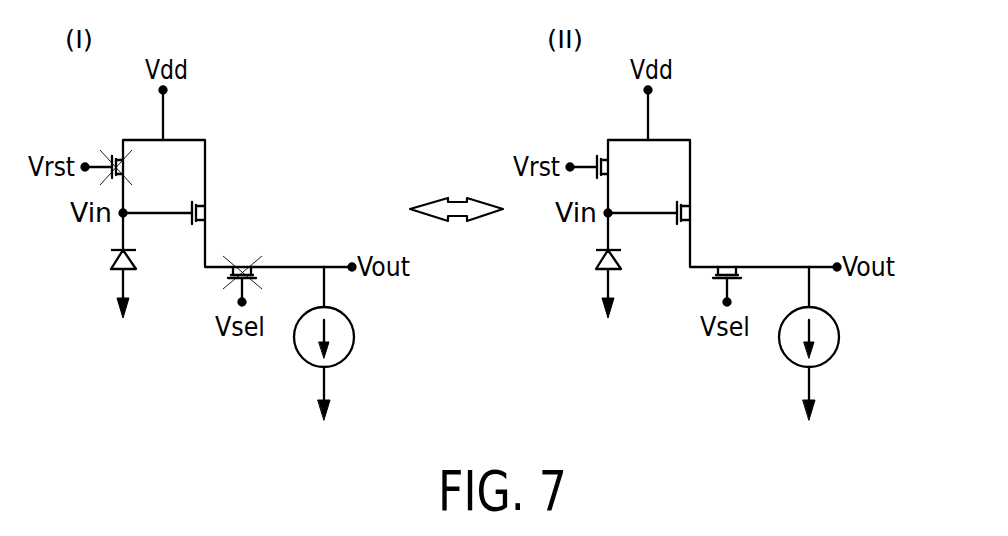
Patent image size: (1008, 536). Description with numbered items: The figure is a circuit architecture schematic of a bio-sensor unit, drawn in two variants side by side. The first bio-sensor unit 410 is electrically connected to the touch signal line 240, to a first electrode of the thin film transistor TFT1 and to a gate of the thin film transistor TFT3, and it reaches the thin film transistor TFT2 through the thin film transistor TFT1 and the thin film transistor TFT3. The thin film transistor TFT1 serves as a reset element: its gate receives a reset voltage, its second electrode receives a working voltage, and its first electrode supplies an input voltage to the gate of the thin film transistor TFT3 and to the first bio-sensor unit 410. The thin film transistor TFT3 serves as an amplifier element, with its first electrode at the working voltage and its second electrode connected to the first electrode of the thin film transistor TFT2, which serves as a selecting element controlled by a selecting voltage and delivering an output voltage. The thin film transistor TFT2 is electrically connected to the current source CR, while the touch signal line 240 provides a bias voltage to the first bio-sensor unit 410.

The first bio-sensor unit 410 is at (108, 253).
The touch signal line 240 is at (366, 309).
The thin film transistor TFT1 is at (397, 167).
The thin film transistor TFT2 is at (488, 254).
The thin film transistor TFT3 is at (474, 212).
The current source CR is at (589, 363).